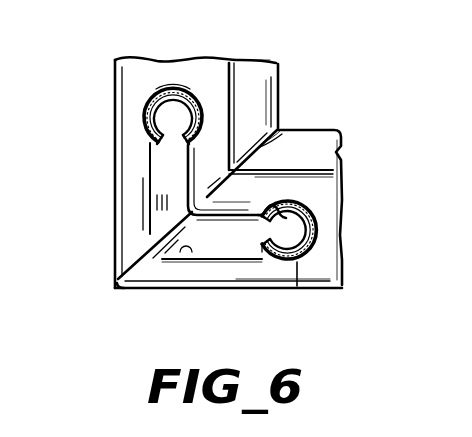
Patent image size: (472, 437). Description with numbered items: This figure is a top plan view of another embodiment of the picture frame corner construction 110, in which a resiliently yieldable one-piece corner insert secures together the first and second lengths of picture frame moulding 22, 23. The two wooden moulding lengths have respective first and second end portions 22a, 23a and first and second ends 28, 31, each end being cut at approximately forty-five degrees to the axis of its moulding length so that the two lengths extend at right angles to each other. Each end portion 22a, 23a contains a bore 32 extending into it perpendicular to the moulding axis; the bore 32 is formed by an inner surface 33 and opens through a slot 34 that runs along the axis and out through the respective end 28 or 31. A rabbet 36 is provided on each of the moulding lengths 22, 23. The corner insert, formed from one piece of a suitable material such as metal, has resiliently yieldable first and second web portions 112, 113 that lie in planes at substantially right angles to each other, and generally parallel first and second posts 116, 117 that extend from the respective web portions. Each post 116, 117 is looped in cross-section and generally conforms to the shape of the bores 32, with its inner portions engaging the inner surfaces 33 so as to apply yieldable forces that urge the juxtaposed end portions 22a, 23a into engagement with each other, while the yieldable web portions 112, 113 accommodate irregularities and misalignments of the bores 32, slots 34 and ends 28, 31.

The picture frame corner construction 110 is at (356, 68).
The first length of picture frame moulding 22 is at (350, 200).
The first end portion 22a is at (326, 284).
The second length of picture frame moulding 23 is at (200, 50).
The second end portion 23a is at (115, 80).
The first end 28 is at (113, 276).
The second end 31 is at (286, 130).
The bore 32 is at (213, 100).
The inner surface 33 is at (172, 85).
The slot 34 is at (147, 241).
The rabbet 36 is at (259, 70).
The first web portion 112 is at (233, 262).
The second web portion 113 is at (183, 165).
The first post 116 is at (296, 270).
The second post 117 is at (142, 101).